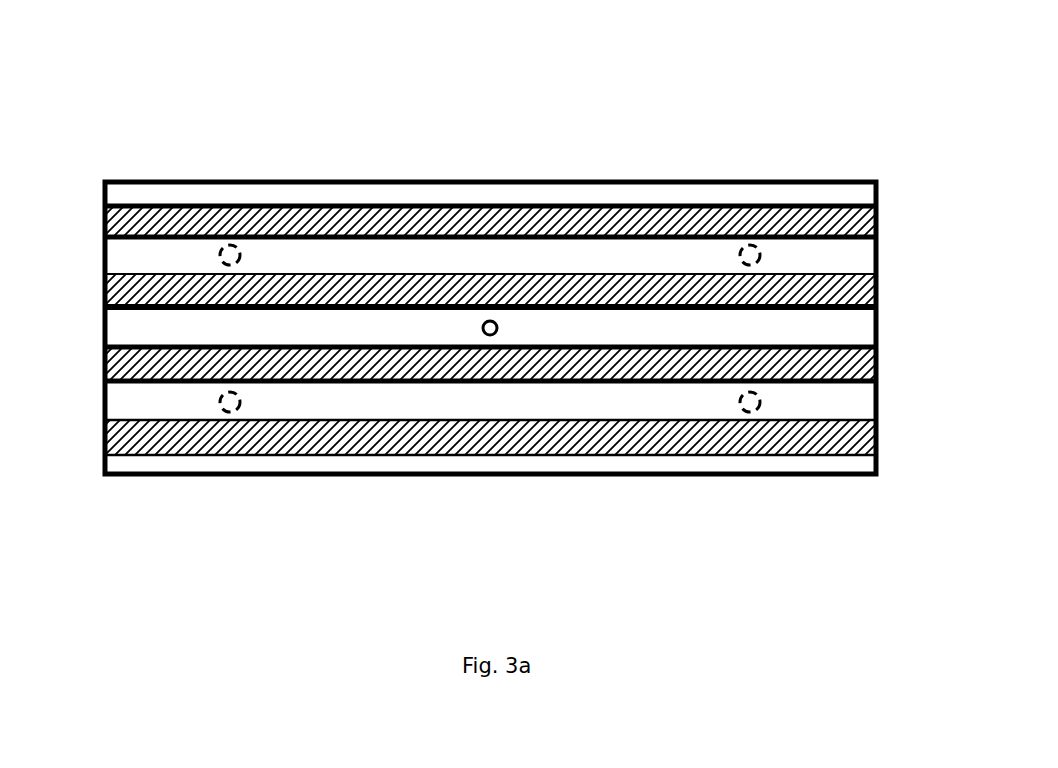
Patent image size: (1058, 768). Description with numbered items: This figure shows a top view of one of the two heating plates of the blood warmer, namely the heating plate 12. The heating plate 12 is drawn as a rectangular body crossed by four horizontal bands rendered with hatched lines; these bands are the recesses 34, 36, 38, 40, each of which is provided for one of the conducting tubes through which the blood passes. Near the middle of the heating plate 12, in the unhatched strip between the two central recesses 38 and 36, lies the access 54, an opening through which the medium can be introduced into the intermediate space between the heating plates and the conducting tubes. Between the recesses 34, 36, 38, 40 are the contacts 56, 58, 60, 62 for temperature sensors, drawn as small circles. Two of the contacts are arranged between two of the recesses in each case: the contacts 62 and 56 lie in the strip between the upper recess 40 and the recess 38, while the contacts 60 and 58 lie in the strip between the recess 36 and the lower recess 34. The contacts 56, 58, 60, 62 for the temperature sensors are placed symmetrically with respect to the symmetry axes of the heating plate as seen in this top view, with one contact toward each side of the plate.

The heating plate 12 is at (810, 78).
The recess 34 is at (298, 442).
The recess 36 is at (365, 363).
The recess 38 is at (298, 300).
The recess 40 is at (358, 232).
The access 54 is at (490, 319).
The contact for temperature sensor 56 is at (780, 255).
The contact for temperature sensor 58 is at (770, 402).
The contact for temperature sensor 60 is at (210, 402).
The contact for temperature sensor 62 is at (210, 255).